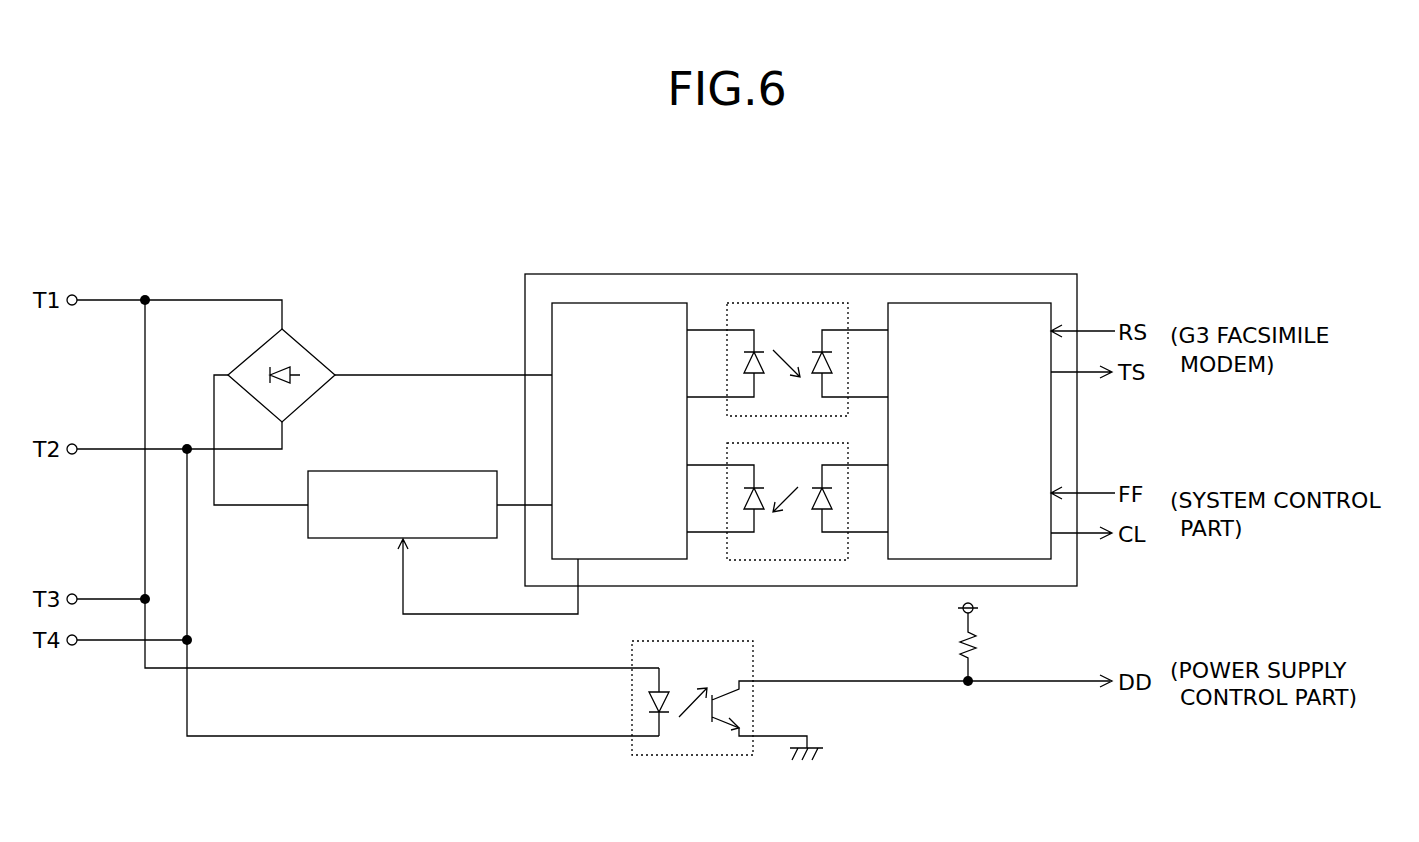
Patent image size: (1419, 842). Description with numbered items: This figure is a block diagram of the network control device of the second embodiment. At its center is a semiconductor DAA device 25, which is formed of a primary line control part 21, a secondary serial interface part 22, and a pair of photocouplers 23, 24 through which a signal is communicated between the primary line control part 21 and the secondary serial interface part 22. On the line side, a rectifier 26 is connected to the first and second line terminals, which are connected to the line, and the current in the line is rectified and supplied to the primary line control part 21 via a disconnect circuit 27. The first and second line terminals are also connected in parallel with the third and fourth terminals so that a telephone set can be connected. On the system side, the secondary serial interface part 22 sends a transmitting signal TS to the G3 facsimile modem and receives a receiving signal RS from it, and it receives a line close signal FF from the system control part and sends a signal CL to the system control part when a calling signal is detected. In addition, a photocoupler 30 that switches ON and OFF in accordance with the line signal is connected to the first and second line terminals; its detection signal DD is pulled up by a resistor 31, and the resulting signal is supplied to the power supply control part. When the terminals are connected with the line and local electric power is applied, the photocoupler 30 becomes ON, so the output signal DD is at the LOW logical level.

The primary line control part 21 is at (620, 303).
The secondary serial interface part 22 is at (970, 303).
The photocoupler 23 is at (790, 303).
The photocoupler 24 is at (795, 560).
The semiconductor DAA device 25 is at (722, 274).
The rectifier 26 is at (310, 350).
The disconnect circuit 27 is at (308, 538).
The photocoupler 30 is at (695, 755).
The resistor 31 is at (978, 635).